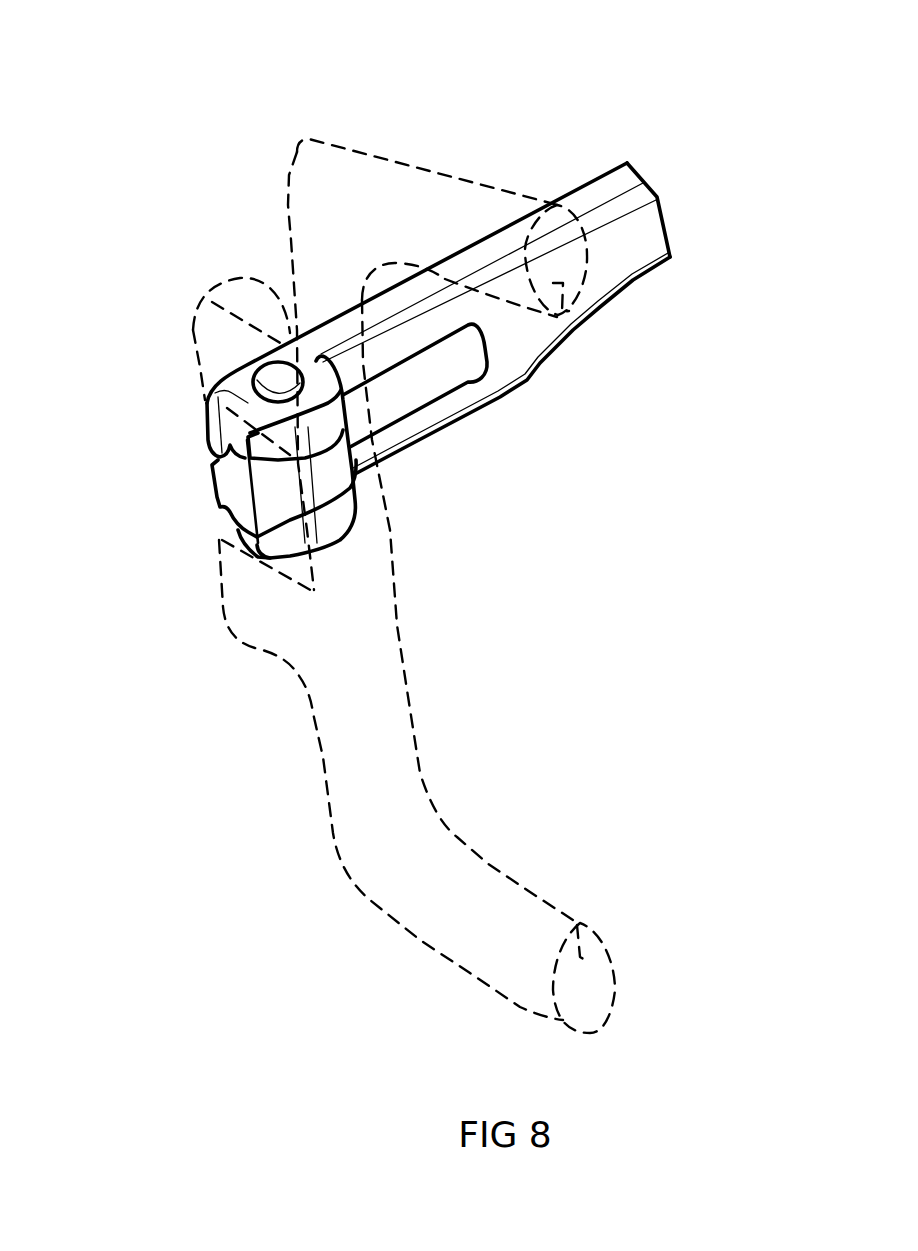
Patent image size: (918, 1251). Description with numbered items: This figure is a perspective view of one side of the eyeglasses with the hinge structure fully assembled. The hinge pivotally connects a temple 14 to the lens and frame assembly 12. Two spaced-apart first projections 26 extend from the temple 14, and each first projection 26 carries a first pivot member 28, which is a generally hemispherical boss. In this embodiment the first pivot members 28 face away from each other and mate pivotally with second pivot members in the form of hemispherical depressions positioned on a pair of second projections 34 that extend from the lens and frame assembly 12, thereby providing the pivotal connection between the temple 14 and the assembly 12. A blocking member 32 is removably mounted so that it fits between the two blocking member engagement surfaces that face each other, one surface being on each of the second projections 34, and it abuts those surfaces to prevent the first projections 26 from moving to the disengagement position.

The lens and frame assembly 12 is at (410, 183).
The temple 14 is at (622, 240).
The first projection 26 is at (403, 338).
The first pivot member 28 is at (273, 377).
The blocking member 32 is at (238, 490).
The second projection 34 is at (243, 297).